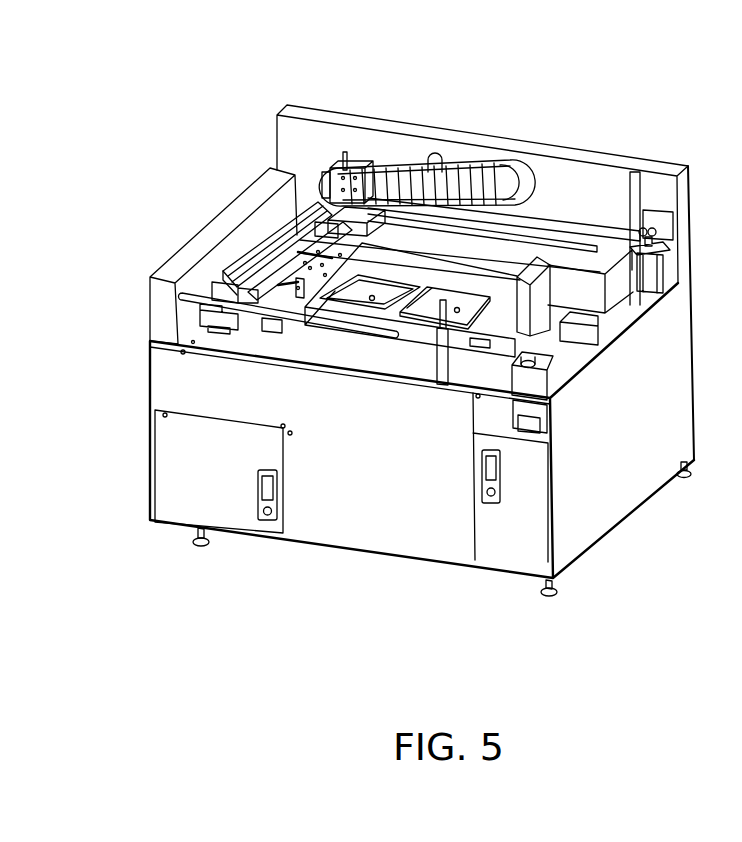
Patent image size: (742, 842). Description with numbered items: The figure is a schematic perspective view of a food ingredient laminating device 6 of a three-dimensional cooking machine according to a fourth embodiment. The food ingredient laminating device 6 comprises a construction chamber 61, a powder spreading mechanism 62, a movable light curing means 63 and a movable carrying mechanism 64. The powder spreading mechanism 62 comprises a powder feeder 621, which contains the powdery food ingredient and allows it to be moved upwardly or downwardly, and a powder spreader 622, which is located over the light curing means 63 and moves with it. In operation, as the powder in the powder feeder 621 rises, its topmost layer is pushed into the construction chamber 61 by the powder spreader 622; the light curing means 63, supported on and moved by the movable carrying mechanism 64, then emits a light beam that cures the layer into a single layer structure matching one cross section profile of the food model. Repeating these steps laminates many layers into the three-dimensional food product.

The food ingredient laminating device 6 is at (674, 146).
The construction chamber 61 is at (433, 309).
The powder spreading mechanism 62 is at (406, 457).
The powder feeder 621 is at (357, 297).
The powder spreader 622 is at (300, 295).
The movable light curing means 63 is at (202, 313).
The movable carrying mechanism 64 is at (325, 200).